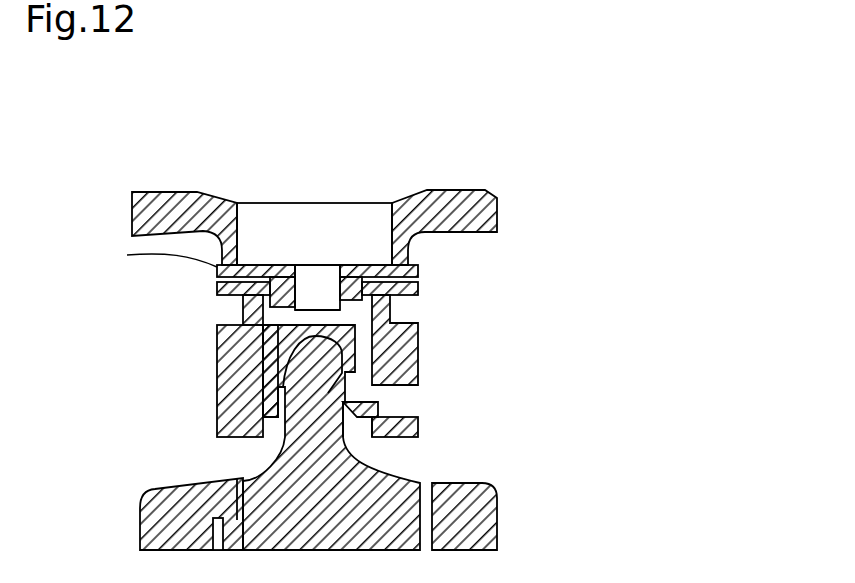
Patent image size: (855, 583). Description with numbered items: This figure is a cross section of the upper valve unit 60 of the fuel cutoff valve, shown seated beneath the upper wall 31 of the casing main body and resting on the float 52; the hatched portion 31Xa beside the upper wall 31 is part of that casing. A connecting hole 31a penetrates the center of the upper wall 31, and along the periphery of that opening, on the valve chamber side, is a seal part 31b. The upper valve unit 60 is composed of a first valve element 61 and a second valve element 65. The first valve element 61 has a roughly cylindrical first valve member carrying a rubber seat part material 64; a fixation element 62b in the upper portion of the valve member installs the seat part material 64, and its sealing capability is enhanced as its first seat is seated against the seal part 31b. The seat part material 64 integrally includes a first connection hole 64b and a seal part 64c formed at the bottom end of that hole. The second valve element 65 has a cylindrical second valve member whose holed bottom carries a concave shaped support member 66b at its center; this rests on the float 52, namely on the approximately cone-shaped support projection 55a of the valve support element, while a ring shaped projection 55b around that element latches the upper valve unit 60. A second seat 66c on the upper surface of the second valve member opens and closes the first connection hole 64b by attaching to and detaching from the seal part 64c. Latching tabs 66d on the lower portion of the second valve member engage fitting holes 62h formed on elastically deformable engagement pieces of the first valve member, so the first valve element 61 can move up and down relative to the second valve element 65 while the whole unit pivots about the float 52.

The upper wall 31 is at (170, 192).
The connecting hole 31a is at (272, 203).
The seal part 31b is at (127, 255).
The flange portion 31Xa is at (453, 190).
The float 52 is at (497, 525).
The support projection 55a is at (345, 380).
The ring shaped projection 55b is at (227, 415).
The upper valve unit 60 is at (513, 322).
The first valve element 61 is at (418, 290).
The fixation element 62b is at (217, 287).
The fitting hole 62h is at (407, 407).
The seat part material 64 is at (410, 262).
The first connection hole 64b is at (340, 310).
The seal part 64c is at (297, 268).
The second valve element 65 is at (405, 358).
The shaped support member 66b is at (323, 347).
The second seat 66c is at (217, 328).
The latching tab 66d is at (373, 402).